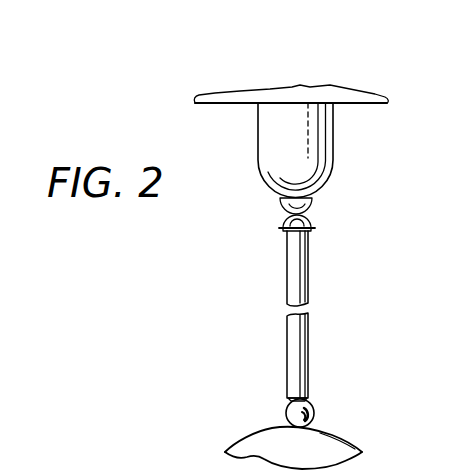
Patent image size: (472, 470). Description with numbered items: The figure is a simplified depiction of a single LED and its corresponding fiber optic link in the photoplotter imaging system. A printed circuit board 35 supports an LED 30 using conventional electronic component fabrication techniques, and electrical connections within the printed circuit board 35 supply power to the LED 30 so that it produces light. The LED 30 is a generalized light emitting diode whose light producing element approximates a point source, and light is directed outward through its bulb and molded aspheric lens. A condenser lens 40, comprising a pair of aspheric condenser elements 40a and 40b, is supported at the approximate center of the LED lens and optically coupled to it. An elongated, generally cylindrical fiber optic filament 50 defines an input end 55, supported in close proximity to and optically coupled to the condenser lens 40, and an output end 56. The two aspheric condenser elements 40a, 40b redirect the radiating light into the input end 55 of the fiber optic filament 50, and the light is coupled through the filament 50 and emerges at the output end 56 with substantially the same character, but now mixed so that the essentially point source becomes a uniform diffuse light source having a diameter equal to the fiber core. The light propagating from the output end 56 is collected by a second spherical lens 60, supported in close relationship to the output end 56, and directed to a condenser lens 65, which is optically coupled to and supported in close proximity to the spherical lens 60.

The LED 30 is at (276, 153).
The printed circuit board 35 is at (330, 86).
The condenser lens 40 is at (300, 208).
The aspheric condenser element 40a is at (310, 206).
The aspheric condenser element 40b is at (306, 221).
The fiber optic filament 50 is at (289, 264).
The input end 55 is at (306, 229).
The output end 56 is at (303, 404).
The second spherical lens 60 is at (284, 412).
The condenser lens 65 is at (302, 444).